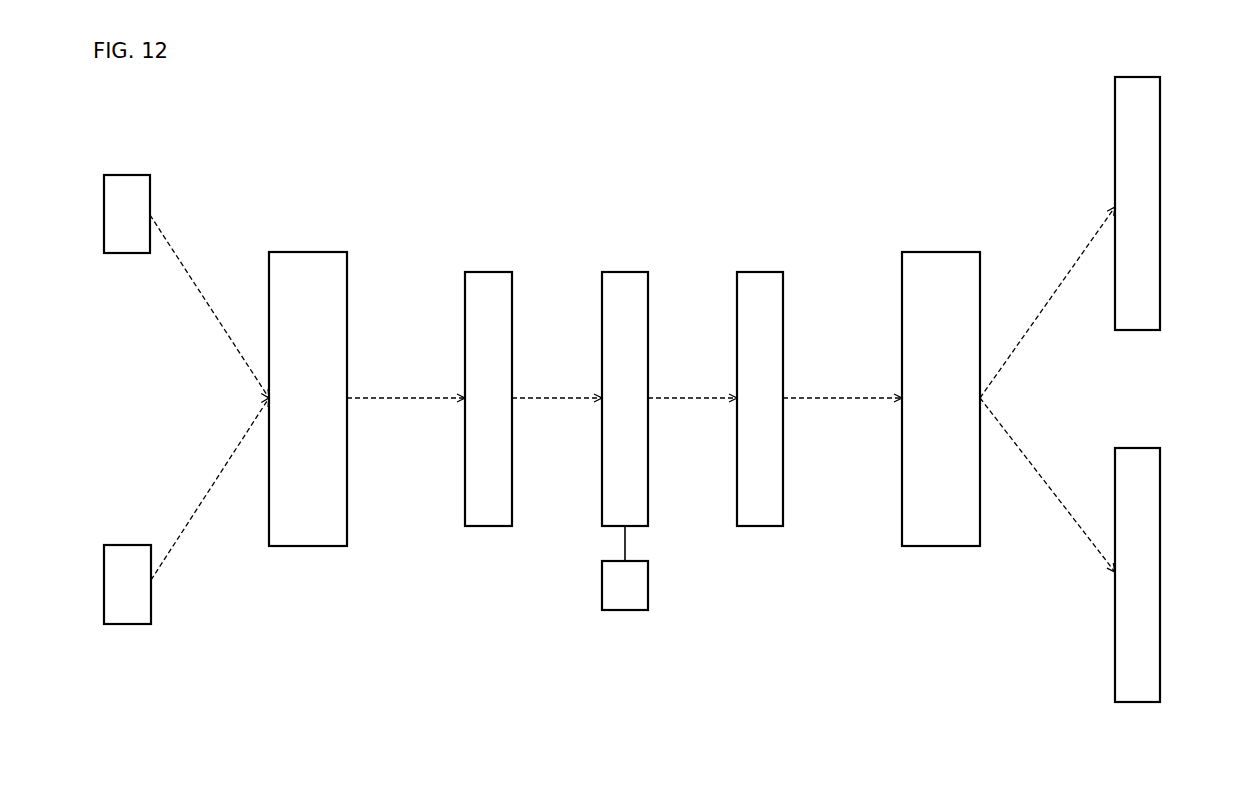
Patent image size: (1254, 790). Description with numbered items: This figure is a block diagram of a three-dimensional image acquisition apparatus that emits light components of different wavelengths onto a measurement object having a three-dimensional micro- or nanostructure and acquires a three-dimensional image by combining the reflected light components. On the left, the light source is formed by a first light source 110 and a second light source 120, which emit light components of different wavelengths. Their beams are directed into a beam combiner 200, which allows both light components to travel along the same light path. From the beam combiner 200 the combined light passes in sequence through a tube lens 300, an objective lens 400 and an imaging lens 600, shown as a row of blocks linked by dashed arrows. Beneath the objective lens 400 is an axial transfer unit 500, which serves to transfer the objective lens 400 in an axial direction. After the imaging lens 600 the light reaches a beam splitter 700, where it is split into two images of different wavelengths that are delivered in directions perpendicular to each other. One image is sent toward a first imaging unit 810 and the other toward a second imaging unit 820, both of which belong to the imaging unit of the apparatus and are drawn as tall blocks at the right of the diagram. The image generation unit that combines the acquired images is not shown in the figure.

The first light source 110 is at (141, 175).
The second light source 120 is at (140, 624).
The beam combiner 200 is at (291, 252).
The tube lens 300 is at (487, 272).
The objective lens 400 is at (625, 272).
The axial transfer unit 500 is at (602, 582).
The imaging lens 600 is at (757, 272).
The beam splitter 700 is at (935, 252).
The first imaging unit 810 is at (1160, 168).
The second imaging unit 820 is at (1160, 562).